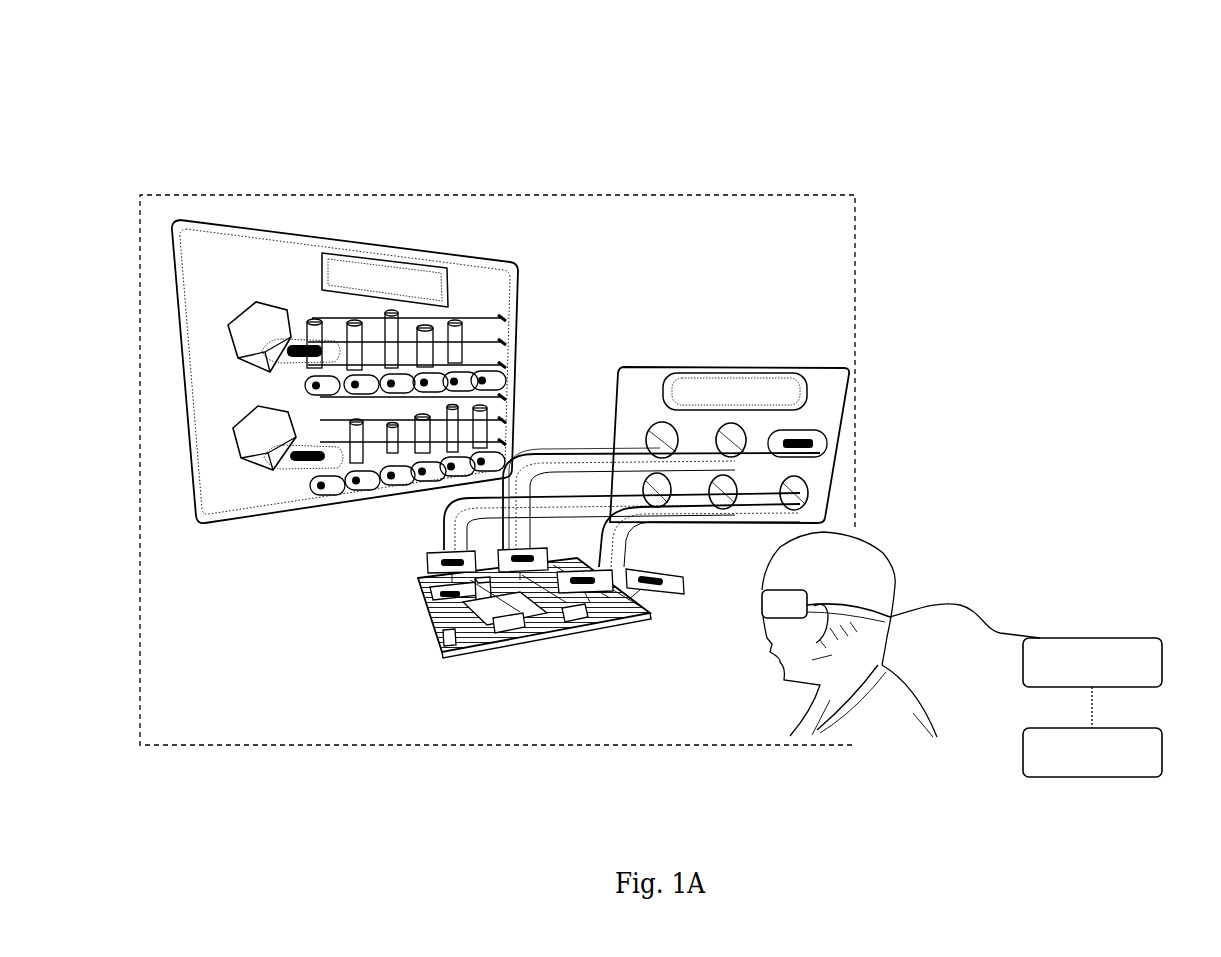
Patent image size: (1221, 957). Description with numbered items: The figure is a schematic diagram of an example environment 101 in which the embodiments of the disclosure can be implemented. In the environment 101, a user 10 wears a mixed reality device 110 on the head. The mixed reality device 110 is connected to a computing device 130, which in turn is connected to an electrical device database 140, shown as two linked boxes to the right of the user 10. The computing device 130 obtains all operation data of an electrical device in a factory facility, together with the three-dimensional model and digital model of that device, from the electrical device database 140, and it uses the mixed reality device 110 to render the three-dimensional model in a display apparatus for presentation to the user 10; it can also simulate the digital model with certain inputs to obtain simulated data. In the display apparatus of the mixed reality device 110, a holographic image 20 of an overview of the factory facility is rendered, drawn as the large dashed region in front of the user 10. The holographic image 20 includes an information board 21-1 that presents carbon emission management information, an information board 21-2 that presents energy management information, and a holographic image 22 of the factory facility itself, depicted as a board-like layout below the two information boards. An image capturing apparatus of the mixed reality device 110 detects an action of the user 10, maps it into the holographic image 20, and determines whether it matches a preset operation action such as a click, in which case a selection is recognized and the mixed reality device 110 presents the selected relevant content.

The environment 101 is at (317, 75).
The holographic image 20 is at (465, 183).
The information board 21-1 is at (270, 228).
The information board 21-2 is at (815, 362).
The holographic image of the factory facility 22 is at (448, 678).
The user 10 is at (887, 483).
The mixed reality device 110 is at (795, 578).
The computing device 130 is at (1120, 640).
The electrical device database 140 is at (1122, 727).